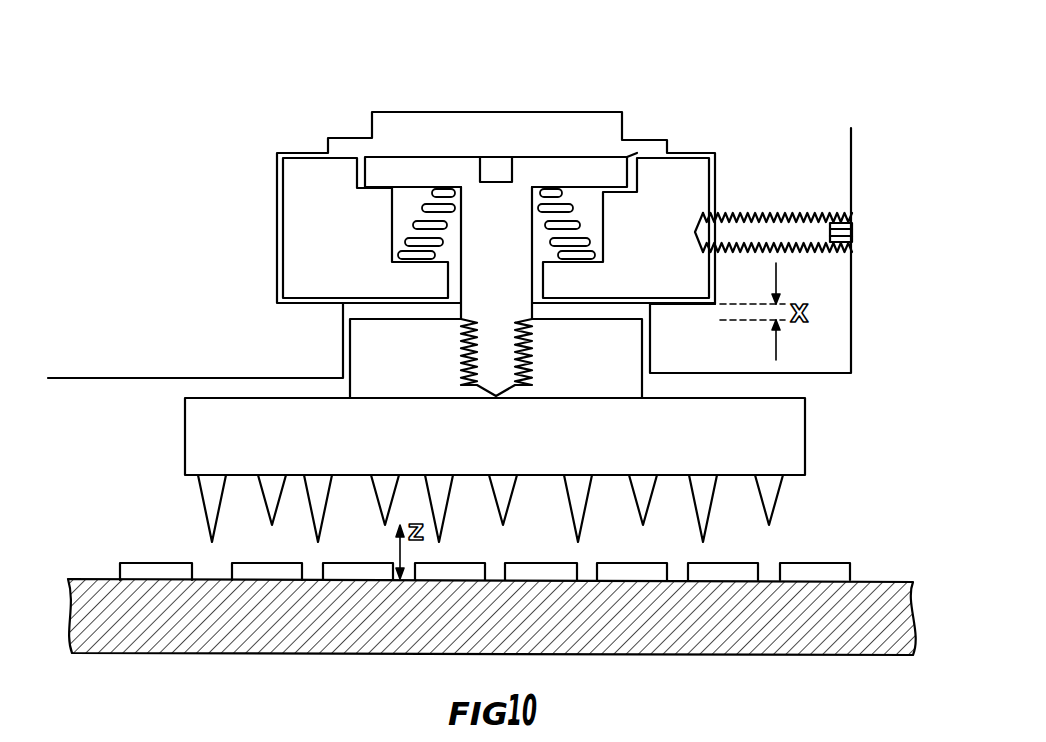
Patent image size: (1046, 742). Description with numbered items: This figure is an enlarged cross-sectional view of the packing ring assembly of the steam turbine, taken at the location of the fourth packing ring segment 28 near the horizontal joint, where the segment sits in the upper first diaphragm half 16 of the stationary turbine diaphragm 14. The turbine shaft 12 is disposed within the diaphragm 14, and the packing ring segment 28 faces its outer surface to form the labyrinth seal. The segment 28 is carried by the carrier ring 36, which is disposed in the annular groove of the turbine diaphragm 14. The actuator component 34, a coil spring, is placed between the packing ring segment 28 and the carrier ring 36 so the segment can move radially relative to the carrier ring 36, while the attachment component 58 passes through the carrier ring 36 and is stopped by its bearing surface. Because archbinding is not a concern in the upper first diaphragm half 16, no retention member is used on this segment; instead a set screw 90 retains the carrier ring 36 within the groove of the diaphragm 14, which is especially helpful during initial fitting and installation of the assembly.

The turbine shaft 12 is at (697, 633).
The turbine diaphragm 14 is at (139, 312).
The first diaphragm half 16 is at (852, 288).
The fourth packing ring segment 28 is at (334, 456).
The actuator component 34 is at (577, 225).
The carrier ring 36 is at (337, 252).
The attachment component 58 is at (408, 172).
The set screw 90 is at (792, 225).